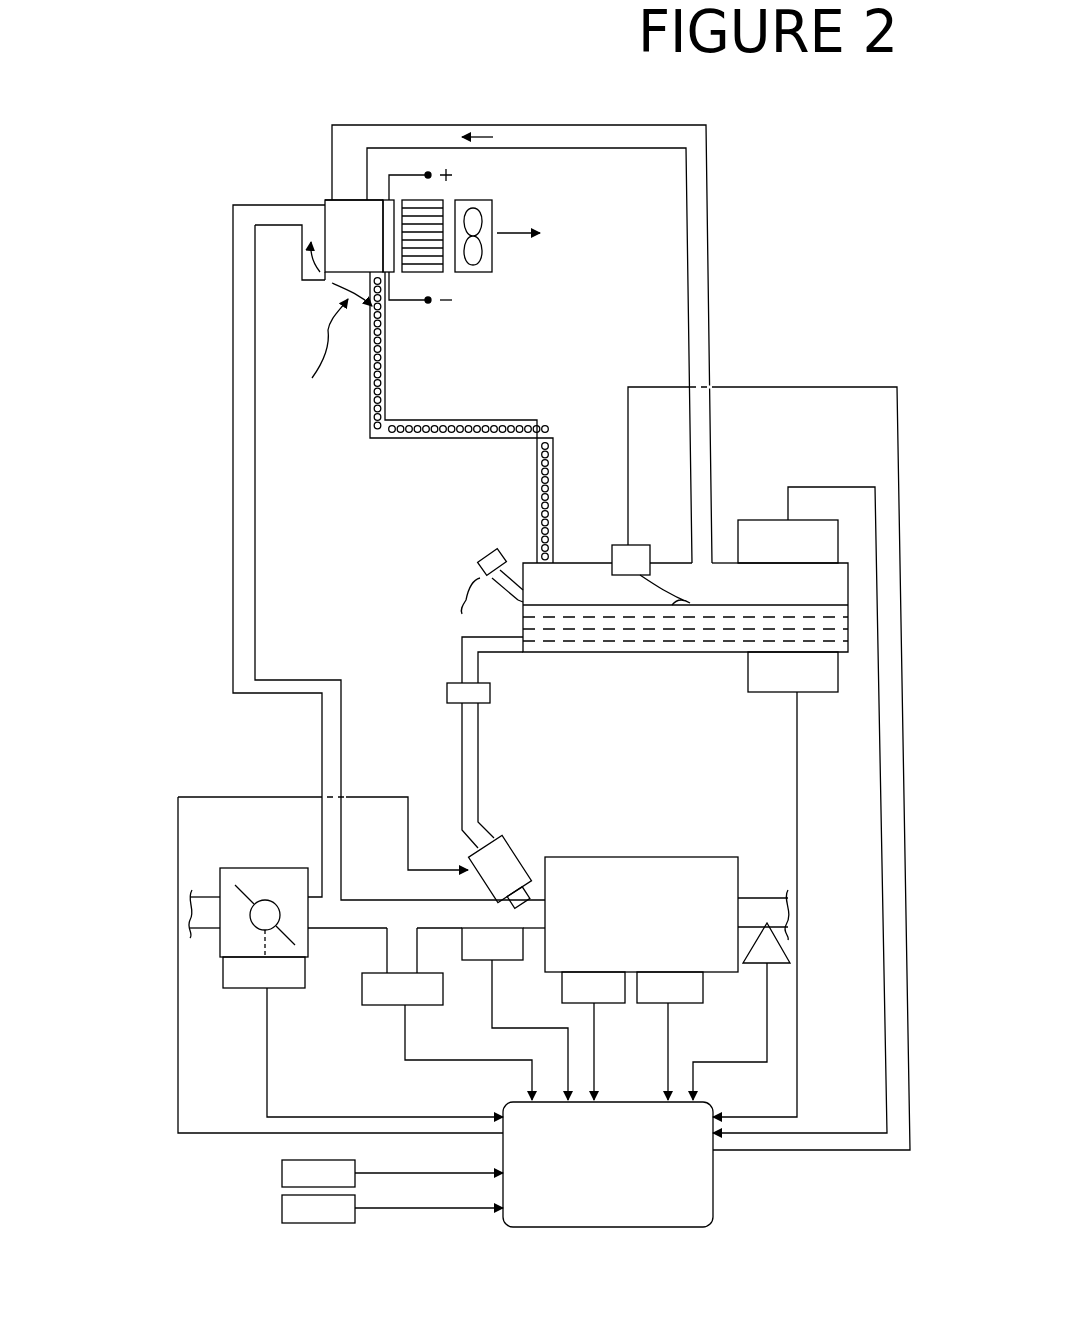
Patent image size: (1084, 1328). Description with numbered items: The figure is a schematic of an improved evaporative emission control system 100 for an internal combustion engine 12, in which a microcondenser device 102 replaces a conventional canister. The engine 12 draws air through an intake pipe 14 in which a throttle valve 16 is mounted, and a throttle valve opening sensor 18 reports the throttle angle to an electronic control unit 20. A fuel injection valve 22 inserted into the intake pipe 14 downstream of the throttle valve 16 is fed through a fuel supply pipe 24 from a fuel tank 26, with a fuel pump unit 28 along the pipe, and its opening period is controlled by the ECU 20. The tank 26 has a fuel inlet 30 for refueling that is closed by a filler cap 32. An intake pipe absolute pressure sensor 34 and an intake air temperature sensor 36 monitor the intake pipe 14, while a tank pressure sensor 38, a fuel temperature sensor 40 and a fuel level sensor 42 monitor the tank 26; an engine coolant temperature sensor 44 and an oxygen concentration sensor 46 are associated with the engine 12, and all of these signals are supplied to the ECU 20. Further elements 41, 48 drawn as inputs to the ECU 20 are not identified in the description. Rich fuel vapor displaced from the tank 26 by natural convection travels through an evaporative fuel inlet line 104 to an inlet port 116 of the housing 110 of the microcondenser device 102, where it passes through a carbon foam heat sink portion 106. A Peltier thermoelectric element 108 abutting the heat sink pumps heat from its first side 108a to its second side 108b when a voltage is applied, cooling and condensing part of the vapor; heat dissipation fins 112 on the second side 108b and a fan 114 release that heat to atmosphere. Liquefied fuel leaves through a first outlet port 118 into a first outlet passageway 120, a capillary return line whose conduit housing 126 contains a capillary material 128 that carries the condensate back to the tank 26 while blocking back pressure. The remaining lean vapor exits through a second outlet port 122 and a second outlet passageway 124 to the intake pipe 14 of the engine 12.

The evaporative emission control system 100 is at (196, 335).
The microcondenser device 102 is at (315, 352).
The evaporative fuel inlet passageway 104 is at (706, 200).
The heat sink portion 106 is at (325, 222).
The thermoelectric element 108 is at (448, 162).
The first side of the microelement 108a is at (385, 230).
The second side of the microelement 108b is at (430, 216).
The housing 110 is at (336, 284).
The heat dissipation fins 112 is at (428, 282).
The fan 114 is at (484, 280).
The inlet port 116 is at (338, 199).
The first outlet port 118 is at (467, 417).
The first outlet passageway 120 is at (403, 443).
The second outlet port 122 is at (333, 272).
The second outlet passageway 124 is at (257, 568).
The conduit housing 126 is at (471, 441).
The capillary material 128 is at (504, 428).
The internal combustion engine 12 is at (660, 857).
The intake pipe 14 is at (336, 930).
The throttle valve 16 is at (250, 880).
The throttle valve opening sensor 18 is at (250, 990).
The electronic control unit 20 is at (713, 1203).
The fuel injection valve 22 is at (534, 840).
The fuel supply pipe 24 is at (482, 777).
The fuel tank 26 is at (693, 654).
The fuel pump unit 28 is at (447, 712).
The fuel inlet 30 is at (510, 590).
The filler cap 32 is at (458, 604).
The intake pipe absolute pressure sensor 34 is at (383, 1008).
The intake air temperature sensor 36 is at (513, 962).
The tank pressure sensor 38 is at (786, 520).
The fuel temperature sensor 40 is at (814, 694).
The battery voltage sensor VB 41 is at (282, 1205).
The fuel level sensor 42 is at (651, 556).
The engine coolant temperature sensor 44 is at (613, 1005).
The oxygen concentration sensor 46 is at (672, 1005).
The exhaust gas sensor 48 is at (788, 950).